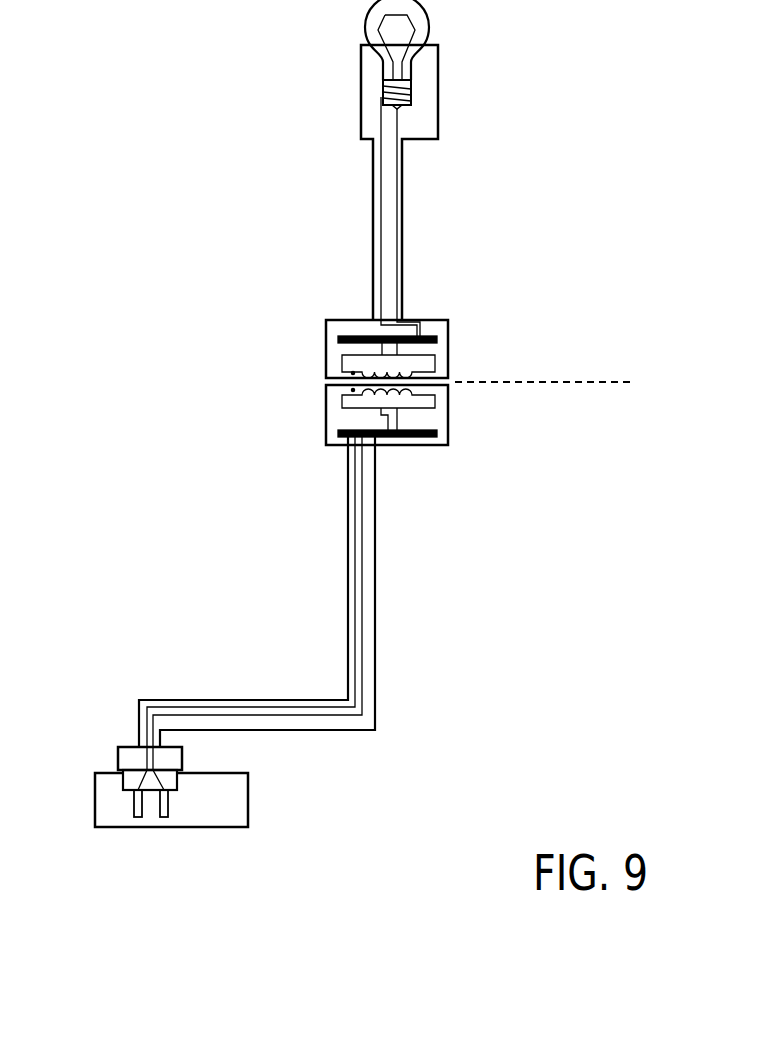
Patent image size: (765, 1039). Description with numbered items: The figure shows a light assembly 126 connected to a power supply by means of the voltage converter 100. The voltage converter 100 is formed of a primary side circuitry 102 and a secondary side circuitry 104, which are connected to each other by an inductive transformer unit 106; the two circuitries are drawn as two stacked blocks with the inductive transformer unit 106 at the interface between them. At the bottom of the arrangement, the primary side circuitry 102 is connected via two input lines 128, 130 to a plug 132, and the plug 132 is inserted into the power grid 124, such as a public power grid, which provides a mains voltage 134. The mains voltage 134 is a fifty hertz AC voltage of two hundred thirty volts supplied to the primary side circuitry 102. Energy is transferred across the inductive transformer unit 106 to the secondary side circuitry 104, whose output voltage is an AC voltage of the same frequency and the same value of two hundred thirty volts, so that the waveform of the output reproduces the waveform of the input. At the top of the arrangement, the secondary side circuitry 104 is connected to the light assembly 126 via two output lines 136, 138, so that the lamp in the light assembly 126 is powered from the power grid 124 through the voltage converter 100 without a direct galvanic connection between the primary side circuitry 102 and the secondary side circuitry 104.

The voltage converter 100 is at (260, 320).
The primary side circuitry 102 is at (552, 444).
The secondary side circuitry 104 is at (492, 328).
The inductive transformer unit 106 is at (282, 385).
The power grid 124 is at (266, 806).
The light assembly 126 is at (439, 93).
The input line 128 is at (363, 589).
The input line 130 is at (355, 539).
The plug 132 is at (118, 748).
The mains voltage 134 is at (137, 853).
The output line 136 is at (381, 246).
The output line 138 is at (400, 247).